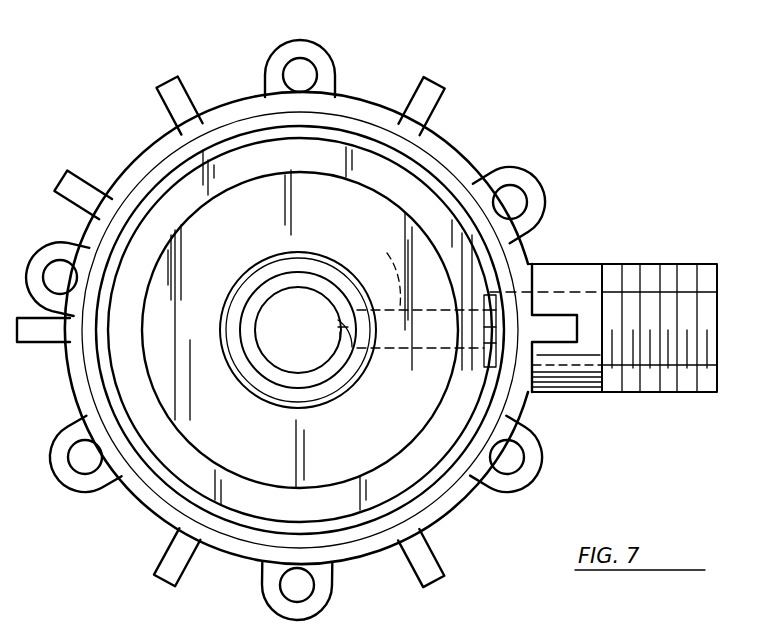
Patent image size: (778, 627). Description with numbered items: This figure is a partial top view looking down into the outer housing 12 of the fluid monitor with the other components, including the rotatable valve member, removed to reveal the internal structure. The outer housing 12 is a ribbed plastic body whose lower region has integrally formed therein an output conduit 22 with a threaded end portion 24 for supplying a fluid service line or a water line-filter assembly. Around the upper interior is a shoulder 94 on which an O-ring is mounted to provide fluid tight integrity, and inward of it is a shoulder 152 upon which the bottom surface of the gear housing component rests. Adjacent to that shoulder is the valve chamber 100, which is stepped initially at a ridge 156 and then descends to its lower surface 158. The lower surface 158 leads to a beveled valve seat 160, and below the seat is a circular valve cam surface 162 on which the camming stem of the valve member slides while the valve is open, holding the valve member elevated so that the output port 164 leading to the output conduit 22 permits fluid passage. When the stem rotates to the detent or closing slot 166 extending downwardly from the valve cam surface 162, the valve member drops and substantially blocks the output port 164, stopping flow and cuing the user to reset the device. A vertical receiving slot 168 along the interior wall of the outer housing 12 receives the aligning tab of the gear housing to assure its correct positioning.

The outer housing 12 is at (471, 171).
The output conduit 22 is at (567, 273).
The threaded end portion 24 is at (667, 273).
The shoulder 94 is at (167, 166).
The valve chamber 100 is at (367, 223).
The shoulder 152 is at (423, 165).
The ridge 156 is at (377, 172).
The lower surface 158 is at (250, 197).
The beveled valve seat 160 is at (330, 400).
The valve cam surface 162 is at (253, 362).
The output port 164 is at (374, 270).
The closing slot 166 is at (342, 320).
The receiving slot 168 is at (490, 327).